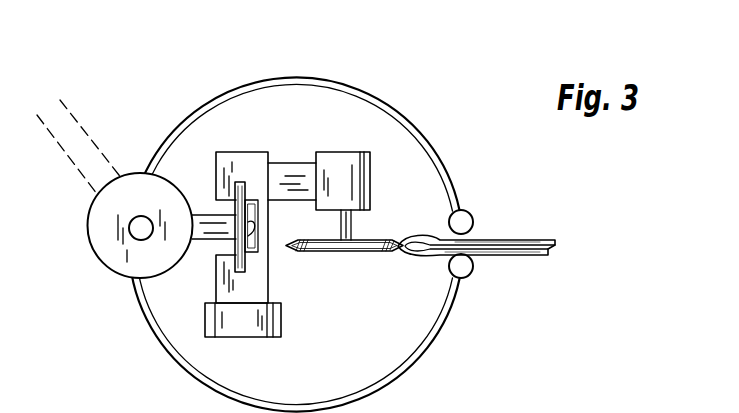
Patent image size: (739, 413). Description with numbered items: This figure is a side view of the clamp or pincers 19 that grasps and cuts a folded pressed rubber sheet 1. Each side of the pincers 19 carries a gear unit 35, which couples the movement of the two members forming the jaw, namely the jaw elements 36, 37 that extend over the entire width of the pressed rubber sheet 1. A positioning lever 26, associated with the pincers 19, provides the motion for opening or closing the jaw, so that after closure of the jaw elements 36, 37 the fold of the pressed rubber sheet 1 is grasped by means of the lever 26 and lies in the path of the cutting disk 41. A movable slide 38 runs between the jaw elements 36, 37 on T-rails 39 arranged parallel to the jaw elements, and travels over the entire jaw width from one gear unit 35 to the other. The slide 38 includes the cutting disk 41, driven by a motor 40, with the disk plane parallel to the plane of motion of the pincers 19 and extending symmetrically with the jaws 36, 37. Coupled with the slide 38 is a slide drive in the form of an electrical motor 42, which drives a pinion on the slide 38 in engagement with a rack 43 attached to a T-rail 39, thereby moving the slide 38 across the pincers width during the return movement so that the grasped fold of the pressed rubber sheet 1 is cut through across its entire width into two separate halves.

The pressed rubber sheet 1 is at (516, 243).
The clamp or pincers 19 is at (367, 87).
The positioning lever 26 is at (78, 127).
The gear unit 35 is at (117, 262).
The jaw element 36 is at (438, 337).
The jaw element 37 is at (417, 123).
The movable slide 38 is at (249, 160).
The T-rail 39 is at (233, 272).
The motor 40 is at (372, 178).
The cutting disk 41 is at (350, 252).
The electrical motor 42 is at (282, 322).
The rack 43 is at (261, 250).